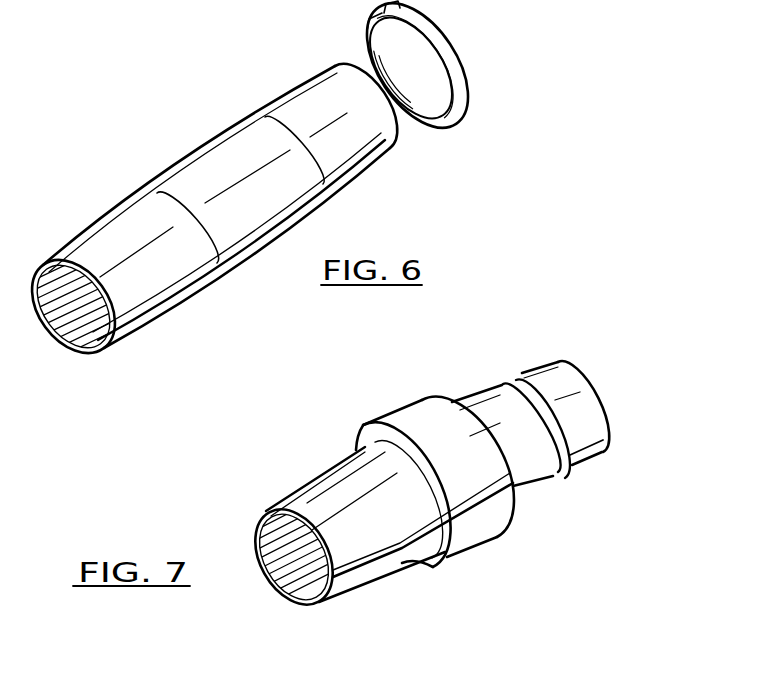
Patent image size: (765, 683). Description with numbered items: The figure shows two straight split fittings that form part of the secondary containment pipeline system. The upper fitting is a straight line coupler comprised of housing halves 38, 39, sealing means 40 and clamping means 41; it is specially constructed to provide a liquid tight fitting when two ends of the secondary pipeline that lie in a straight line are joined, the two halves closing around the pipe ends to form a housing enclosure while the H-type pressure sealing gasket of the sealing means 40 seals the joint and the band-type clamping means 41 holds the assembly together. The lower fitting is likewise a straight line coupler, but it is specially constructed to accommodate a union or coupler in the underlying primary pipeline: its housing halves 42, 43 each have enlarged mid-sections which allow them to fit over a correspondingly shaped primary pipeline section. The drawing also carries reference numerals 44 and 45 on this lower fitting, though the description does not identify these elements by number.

In FIG. 6, the housing half 38 is at (79, 319).
In FIG. 6, the housing half 39 is at (220, 170).
In FIG. 6, the sealing means 40 is at (241, 240).
In FIG. 6, the clamping means 41 is at (430, 72).
In FIG. 7, the housing half 42 is at (291, 562).
In FIG. 7, the housing half 43 is at (349, 521).
In FIG. 7, the collar with slot 44 is at (423, 503).
In FIG. 7, the flange 45 is at (562, 437).